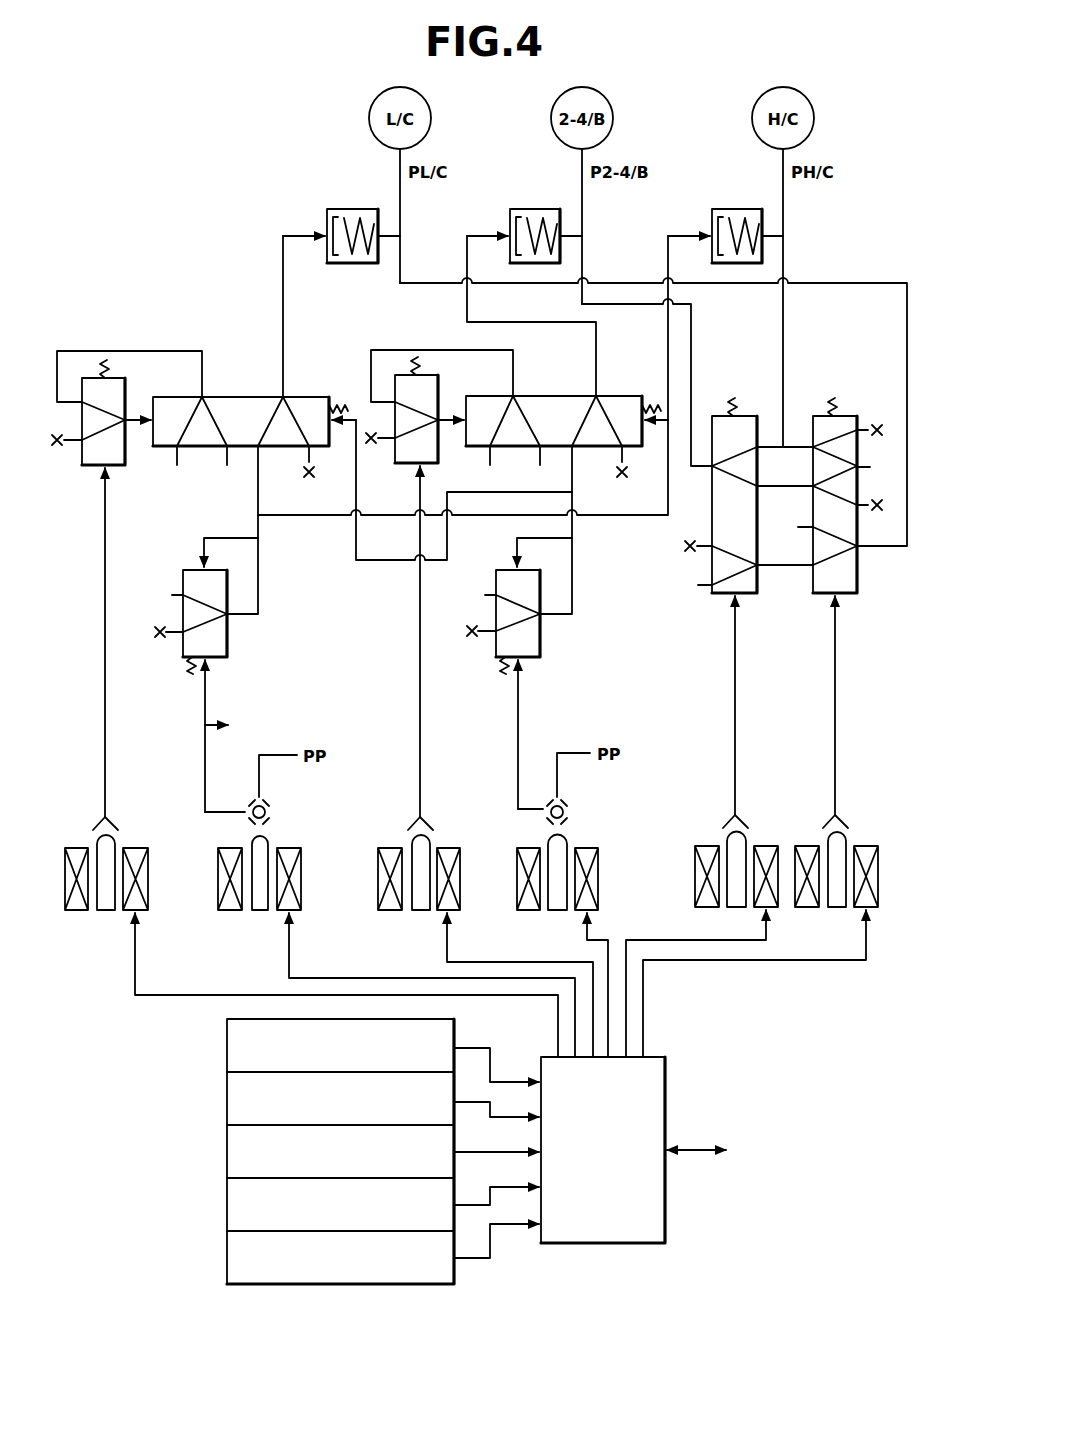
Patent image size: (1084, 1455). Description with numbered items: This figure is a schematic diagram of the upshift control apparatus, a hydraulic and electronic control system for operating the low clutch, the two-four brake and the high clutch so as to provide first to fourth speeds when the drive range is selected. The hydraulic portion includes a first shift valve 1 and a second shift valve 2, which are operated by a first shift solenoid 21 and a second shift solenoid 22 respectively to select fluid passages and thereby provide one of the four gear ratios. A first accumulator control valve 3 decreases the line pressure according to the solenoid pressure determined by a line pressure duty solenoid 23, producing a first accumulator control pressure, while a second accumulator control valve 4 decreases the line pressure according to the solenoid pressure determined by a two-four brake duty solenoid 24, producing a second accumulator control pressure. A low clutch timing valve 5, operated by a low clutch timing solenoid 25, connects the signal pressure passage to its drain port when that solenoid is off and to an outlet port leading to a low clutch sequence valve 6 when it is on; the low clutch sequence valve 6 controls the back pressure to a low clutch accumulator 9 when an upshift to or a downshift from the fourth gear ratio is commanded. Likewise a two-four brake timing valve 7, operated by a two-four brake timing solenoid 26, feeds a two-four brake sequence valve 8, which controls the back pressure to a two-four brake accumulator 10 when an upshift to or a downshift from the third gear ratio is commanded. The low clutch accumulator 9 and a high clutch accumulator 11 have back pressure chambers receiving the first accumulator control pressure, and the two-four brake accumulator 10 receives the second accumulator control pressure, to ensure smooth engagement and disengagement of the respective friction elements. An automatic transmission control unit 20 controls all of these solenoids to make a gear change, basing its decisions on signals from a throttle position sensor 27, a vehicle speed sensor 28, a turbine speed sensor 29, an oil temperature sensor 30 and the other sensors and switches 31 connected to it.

The first shift valve 1 is at (753, 414).
The second shift valve 2 is at (851, 414).
The first accumulator control valve 3 is at (231, 635).
The second accumulator control valve 4 is at (544, 634).
The low clutch timing valve 5 is at (129, 398).
The low clutch sequence valve 6 is at (303, 394).
The 2-4 brake timing valve 7 is at (439, 395).
The 2-4 brake sequence valve 8 is at (614, 393).
The low clutch accumulator 9 is at (353, 207).
The 2-4 brake accumulator 10 is at (540, 207).
The high clutch accumulator 11 is at (745, 207).
The A/T control unit 20 is at (669, 1096).
The first shift solenoid 21 is at (767, 829).
The second shift solenoid 22 is at (867, 829).
The line pressure duty solenoid 23 is at (289, 831).
The 2-4 brake duty solenoid 24 is at (588, 831).
The low clutch timing solenoid 25 is at (134, 831).
The 2-4 brake timing solenoid 26 is at (448, 831).
The throttle position sensor 27 is at (227, 1050).
The vehicle speed sensor 28 is at (227, 1103).
The turbine speed sensor 29 is at (227, 1156).
The oil temperature sensor 30 is at (227, 1209).
The other sensors and switches 31 is at (227, 1262).